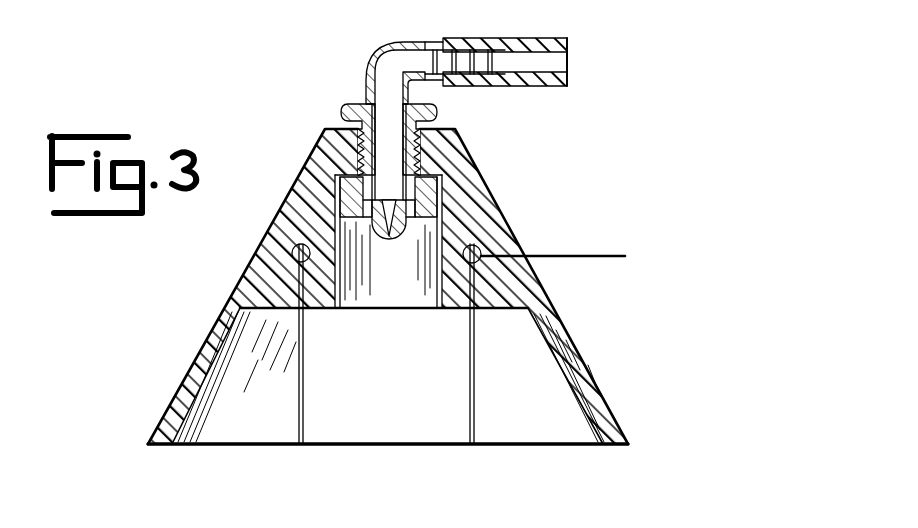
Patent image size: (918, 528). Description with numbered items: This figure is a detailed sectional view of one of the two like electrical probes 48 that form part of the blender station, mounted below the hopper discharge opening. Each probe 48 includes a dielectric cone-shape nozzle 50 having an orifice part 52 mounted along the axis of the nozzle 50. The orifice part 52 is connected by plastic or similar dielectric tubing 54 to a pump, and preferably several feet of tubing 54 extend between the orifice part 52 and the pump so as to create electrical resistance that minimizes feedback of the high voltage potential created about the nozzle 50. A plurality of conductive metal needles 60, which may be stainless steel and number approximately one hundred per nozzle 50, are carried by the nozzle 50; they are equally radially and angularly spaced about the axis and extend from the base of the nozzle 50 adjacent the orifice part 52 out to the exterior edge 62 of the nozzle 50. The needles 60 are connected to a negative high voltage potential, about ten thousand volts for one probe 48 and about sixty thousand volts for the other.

The electrical probe 48 is at (495, 169).
The dielectric cone-shape nozzle 50 is at (242, 279).
The orifice part 52 is at (404, 239).
The dielectric tubing 54 is at (543, 46).
The conductive metal needles 60 is at (298, 410).
The exterior edge of the nozzle 62 is at (414, 447).